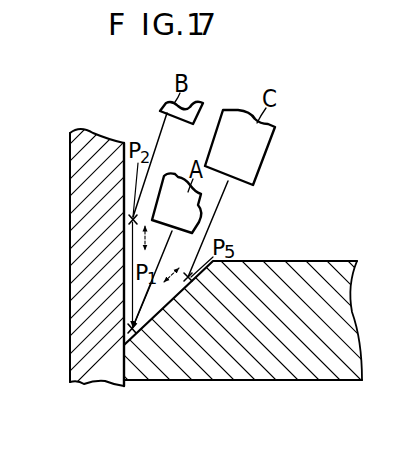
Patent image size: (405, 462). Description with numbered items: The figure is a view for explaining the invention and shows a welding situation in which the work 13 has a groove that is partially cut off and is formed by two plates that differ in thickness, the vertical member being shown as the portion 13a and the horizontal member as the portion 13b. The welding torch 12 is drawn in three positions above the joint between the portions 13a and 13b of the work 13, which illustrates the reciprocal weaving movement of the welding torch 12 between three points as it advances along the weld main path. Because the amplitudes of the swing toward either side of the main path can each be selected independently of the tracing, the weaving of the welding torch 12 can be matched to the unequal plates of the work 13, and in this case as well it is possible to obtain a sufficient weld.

The welding torch 12 is at (195, 108).
The work 13 is at (152, 382).
The vertical workpiece member 13a is at (75, 323).
The horizontal workpiece member 13b is at (283, 380).